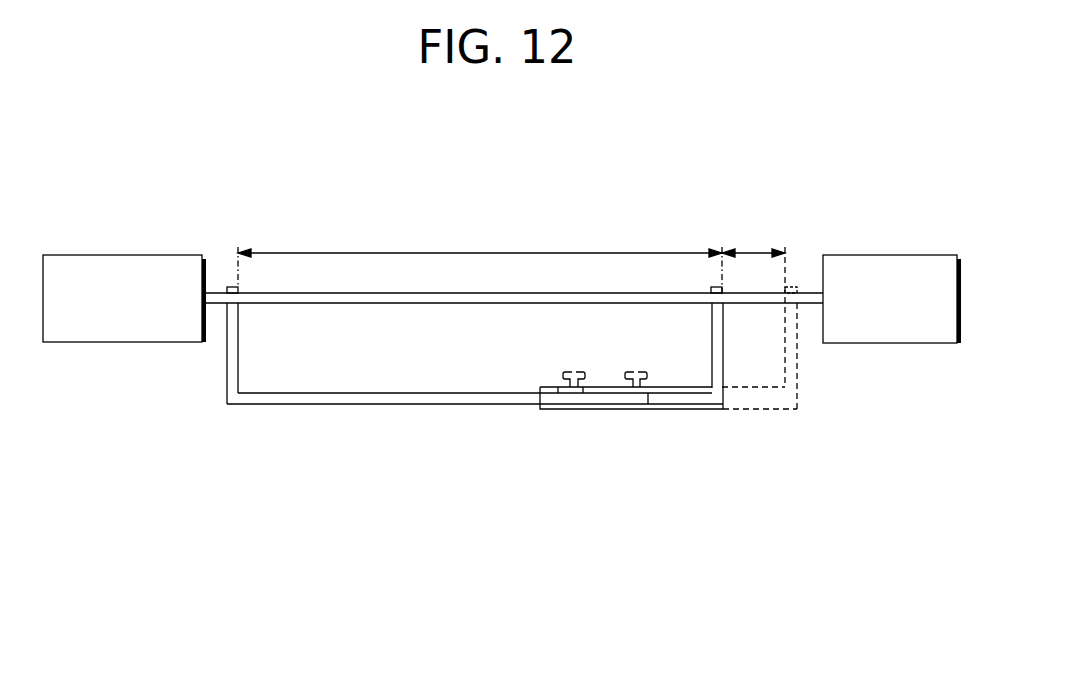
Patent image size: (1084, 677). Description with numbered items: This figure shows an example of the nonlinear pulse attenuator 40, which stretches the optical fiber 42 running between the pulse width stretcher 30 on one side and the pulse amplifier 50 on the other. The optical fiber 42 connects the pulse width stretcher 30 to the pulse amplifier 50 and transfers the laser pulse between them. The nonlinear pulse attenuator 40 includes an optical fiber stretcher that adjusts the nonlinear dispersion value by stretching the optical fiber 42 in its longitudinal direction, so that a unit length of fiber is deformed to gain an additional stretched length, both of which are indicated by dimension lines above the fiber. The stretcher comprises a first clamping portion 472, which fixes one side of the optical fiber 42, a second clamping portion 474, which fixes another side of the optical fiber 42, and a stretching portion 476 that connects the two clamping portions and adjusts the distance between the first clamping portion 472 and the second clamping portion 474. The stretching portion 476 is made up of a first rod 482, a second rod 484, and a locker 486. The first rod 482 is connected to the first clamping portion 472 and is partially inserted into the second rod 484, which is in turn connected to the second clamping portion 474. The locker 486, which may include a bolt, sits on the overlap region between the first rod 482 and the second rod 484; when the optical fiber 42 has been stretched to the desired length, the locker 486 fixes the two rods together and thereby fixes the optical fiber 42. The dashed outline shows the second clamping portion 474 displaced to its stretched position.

The pulse width stretcher 30 is at (108, 346).
The pulse amplifier 50 is at (923, 347).
The optical fiber 42 is at (808, 291).
The nonlinear pulse attenuator 40 is at (538, 396).
The first clamping portion 472 is at (233, 367).
The second clamping portion 474 is at (720, 367).
The stretching portion 476 is at (475, 447).
The first rod 482 is at (465, 402).
The second rod 484 is at (675, 408).
The locker 486 is at (563, 378).